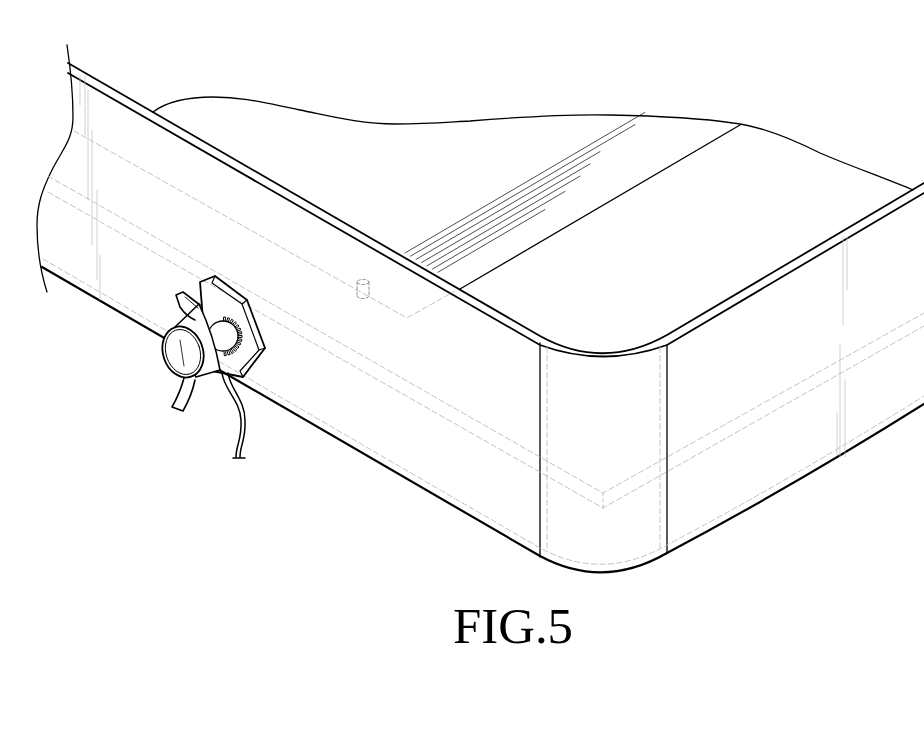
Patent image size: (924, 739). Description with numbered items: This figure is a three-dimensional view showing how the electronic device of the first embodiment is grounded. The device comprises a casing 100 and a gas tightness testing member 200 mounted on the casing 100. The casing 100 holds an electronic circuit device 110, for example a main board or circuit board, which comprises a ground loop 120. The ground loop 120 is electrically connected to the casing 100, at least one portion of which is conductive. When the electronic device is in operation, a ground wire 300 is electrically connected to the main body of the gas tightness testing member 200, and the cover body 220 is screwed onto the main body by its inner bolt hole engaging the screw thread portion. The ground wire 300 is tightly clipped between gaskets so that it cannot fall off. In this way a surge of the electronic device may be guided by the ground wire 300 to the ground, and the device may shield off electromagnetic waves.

The casing 100 is at (430, 493).
The electronic circuit device 110 is at (752, 418).
The ground loop 120 is at (367, 305).
The gas tightness testing member 200 is at (155, 407).
The cover body 220 is at (150, 359).
The ground wire 300 is at (247, 433).